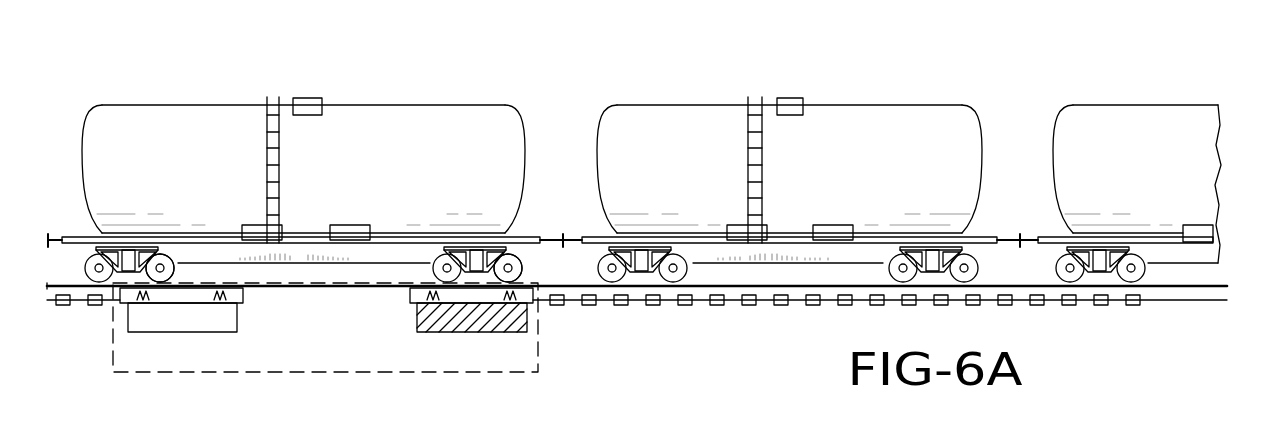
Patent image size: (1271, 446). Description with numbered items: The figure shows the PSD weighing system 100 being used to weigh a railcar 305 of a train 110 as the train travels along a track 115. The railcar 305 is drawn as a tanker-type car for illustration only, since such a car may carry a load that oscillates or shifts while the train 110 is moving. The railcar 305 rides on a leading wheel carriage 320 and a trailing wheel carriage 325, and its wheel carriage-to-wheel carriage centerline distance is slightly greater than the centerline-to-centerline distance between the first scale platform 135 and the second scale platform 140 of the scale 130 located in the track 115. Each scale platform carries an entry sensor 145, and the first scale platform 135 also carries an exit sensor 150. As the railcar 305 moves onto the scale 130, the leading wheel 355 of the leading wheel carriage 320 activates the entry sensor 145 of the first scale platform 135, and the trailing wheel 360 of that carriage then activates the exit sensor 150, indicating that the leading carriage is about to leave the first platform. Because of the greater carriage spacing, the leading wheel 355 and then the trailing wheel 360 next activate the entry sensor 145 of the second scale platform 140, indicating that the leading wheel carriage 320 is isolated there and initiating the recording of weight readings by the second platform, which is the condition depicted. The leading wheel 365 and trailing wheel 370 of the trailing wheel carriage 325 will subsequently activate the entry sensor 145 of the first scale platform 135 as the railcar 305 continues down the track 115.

The PSD weighing system 100 is at (398, 354).
The train 110 is at (1017, 88).
The track 115 is at (730, 292).
The scale 130 is at (327, 354).
The first scale platform 135 is at (153, 322).
The second scale platform 140 is at (443, 322).
The entry sensor 145 is at (143, 303).
The exit sensor 150 is at (222, 303).
The railcar 305 is at (312, 204).
The leading wheel carriage 320 is at (477, 298).
The trailing wheel carriage 325 is at (189, 298).
The leading wheel 355 is at (522, 268).
The trailing wheel 360 is at (433, 268).
The leading wheel 365 is at (175, 267).
The trailing wheel 370 is at (85, 268).